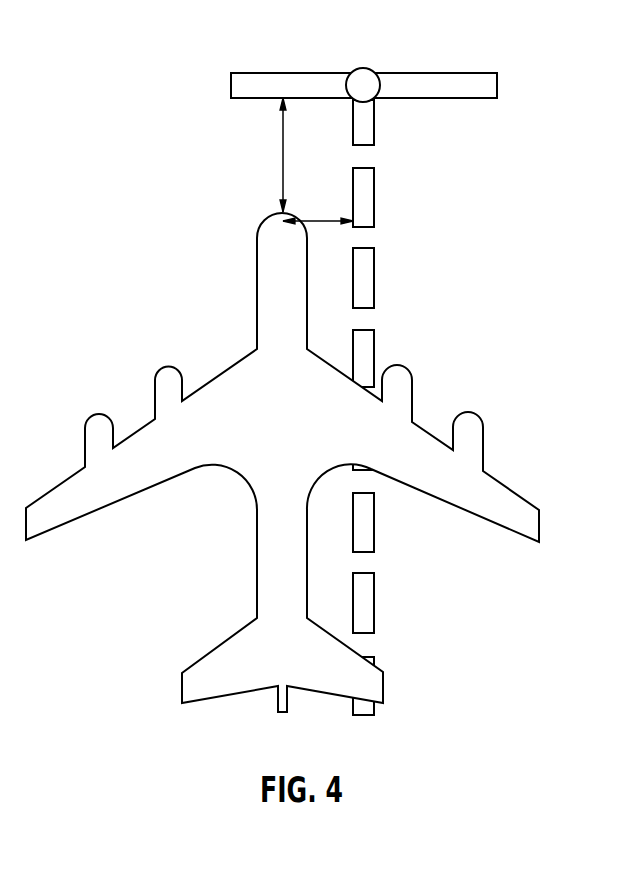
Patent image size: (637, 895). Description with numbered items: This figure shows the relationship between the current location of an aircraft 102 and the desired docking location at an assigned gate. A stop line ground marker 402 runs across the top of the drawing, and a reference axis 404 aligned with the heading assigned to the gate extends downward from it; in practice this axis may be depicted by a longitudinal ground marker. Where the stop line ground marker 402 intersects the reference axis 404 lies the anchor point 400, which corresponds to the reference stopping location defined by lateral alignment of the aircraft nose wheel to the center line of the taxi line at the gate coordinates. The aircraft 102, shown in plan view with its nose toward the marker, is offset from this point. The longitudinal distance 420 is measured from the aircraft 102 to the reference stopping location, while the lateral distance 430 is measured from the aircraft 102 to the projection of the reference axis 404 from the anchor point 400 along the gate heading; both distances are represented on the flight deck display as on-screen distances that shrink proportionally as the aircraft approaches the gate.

The aircraft 102 is at (203, 482).
The anchor point 400 is at (367, 62).
The stop line ground marker 402 is at (253, 70).
The reference axis 404 is at (368, 178).
The longitudinal distance 420 is at (280, 132).
The lateral distance 430 is at (337, 218).